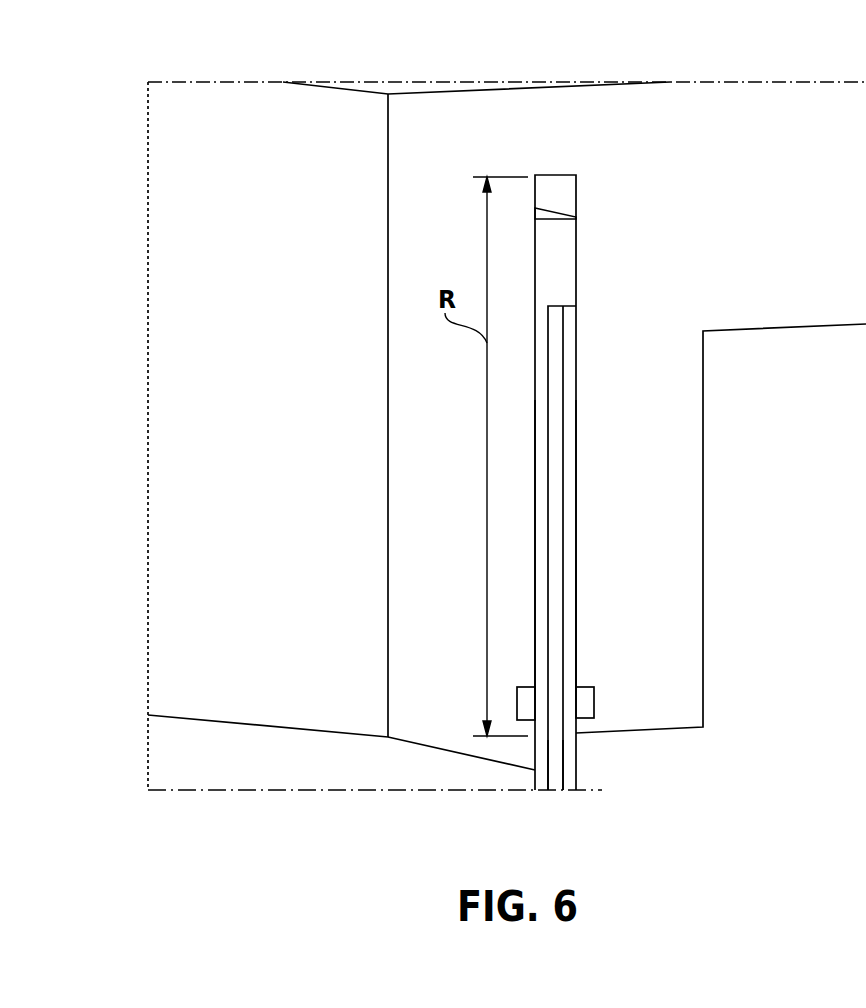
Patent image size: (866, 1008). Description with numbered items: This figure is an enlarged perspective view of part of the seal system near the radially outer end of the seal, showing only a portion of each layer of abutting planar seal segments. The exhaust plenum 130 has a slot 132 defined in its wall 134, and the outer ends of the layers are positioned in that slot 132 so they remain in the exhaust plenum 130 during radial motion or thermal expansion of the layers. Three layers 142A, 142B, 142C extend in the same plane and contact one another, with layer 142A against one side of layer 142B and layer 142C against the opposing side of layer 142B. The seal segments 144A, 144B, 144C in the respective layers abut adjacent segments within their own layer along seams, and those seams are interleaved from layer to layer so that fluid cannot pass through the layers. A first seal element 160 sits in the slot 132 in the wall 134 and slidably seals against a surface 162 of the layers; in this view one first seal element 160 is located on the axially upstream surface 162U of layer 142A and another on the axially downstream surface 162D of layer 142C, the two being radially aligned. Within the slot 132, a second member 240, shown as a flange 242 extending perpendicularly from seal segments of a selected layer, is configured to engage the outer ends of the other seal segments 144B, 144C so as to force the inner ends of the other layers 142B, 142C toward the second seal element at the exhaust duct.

The exhaust plenum 130 is at (696, 82).
The slot 132 is at (553, 190).
The wall 134 is at (178, 170).
The second member 240 is at (631, 236).
The flange 242 is at (560, 264).
The surface 162 is at (557, 550).
The axially upstream surface 162U is at (535, 526).
The axially downstream surface 162D is at (576, 533).
The seal segments 144A is at (394, 775).
The seal segments 144B is at (563, 655).
The seal segments 144C is at (577, 635).
The first seal element 160 is at (525, 705).
The layer 142A is at (543, 781).
The layer 142B is at (558, 790).
The layer 142C is at (577, 760).